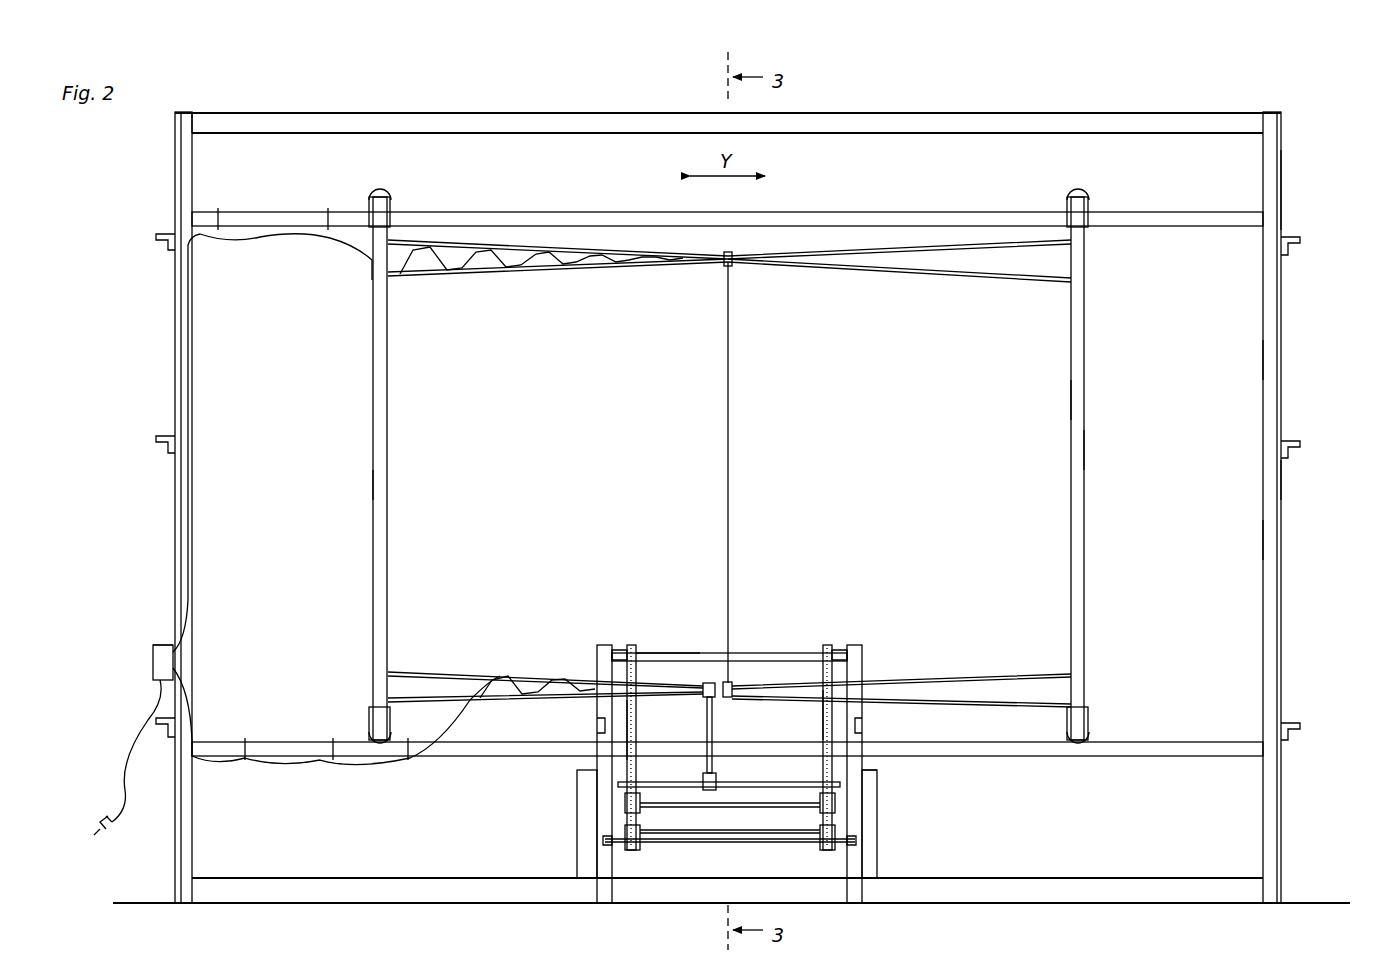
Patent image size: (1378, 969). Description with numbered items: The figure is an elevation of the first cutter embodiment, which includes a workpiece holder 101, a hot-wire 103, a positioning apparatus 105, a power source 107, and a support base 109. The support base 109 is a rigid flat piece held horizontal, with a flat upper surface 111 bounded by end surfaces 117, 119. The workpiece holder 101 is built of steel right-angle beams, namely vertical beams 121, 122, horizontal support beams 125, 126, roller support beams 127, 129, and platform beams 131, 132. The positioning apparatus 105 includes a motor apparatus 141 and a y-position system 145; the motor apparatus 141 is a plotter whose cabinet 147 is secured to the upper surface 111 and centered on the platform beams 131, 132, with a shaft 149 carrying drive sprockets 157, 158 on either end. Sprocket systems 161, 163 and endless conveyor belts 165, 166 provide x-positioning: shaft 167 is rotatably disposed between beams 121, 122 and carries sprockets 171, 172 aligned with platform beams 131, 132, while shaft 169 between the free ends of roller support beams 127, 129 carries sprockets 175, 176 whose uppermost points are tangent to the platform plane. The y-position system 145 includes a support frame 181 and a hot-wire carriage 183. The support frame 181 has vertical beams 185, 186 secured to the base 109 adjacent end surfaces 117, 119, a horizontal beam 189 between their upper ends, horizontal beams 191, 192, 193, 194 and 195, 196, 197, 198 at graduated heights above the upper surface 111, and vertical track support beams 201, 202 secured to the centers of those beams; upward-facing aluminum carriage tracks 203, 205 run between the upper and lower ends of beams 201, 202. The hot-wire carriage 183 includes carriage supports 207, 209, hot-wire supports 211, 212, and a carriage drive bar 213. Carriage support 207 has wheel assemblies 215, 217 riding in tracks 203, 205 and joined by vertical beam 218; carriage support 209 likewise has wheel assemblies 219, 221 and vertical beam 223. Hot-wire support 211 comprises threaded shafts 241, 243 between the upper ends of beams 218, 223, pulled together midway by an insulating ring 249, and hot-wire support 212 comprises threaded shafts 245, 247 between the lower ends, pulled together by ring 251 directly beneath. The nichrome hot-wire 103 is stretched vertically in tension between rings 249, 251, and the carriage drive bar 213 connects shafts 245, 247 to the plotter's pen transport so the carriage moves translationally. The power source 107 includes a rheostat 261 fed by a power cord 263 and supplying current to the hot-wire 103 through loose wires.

The workpiece holder 101 is at (575, 818).
The hot-wire 103 is at (730, 462).
The positioning apparatus 105 is at (1283, 333).
The power source 107 is at (150, 640).
The support base 109 is at (1000, 872).
The upper surface 111 is at (1105, 877).
The end surface 117 is at (178, 895).
The end surface 119 is at (1268, 895).
The vertical beam 121 is at (580, 865).
The vertical beam 122 is at (880, 860).
The horizontal support beam 125 is at (600, 722).
The horizontal support beam 126 is at (860, 733).
The roller support beam 127 is at (600, 645).
The roller support beam 129 is at (856, 645).
The platform beam 131 is at (630, 645).
The platform beam 132 is at (828, 645).
The motor apparatus 141 is at (880, 802).
The y-position system 145 is at (1283, 193).
The cabinet 147 is at (880, 786).
The shaft 149 is at (790, 787).
The drive sprocket 157 is at (640, 808).
The drive sprocket 158 is at (820, 806).
The sprocket system 161 is at (735, 845).
The sprocket system 163 is at (690, 653).
The endless conveyor belt 165 is at (637, 727).
The endless conveyor belt 166 is at (823, 713).
The shaft 167 is at (705, 838).
The shaft 169 is at (660, 653).
The sprocket 171 is at (640, 846).
The sprocket 172 is at (820, 846).
The sprocket 175 is at (620, 650).
The sprocket 176 is at (838, 650).
The support frame 181 is at (1283, 480).
The hot-wire carriage 183 is at (1086, 452).
The vertical beam 185 is at (175, 305).
The vertical beam 186 is at (1263, 362).
The horizontal beam 189 is at (500, 113).
The horizontal beam 191 is at (172, 235).
The horizontal beam 192 is at (162, 435).
The horizontal beam 193 is at (160, 738).
The horizontal beam 194 is at (176, 121).
The horizontal beam 195 is at (1295, 242).
The horizontal beam 196 is at (1295, 441).
The horizontal beam 197 is at (1295, 724).
The horizontal beam 198 is at (1283, 128).
The vertical track support beam 201 is at (192, 474).
The vertical track support beam 202 is at (1263, 535).
The carriage track 203 is at (275, 212).
The carriage track 205 is at (278, 742).
The carriage support 207 is at (388, 392).
The carriage support 209 is at (1068, 403).
The hot-wire support 211 is at (698, 266).
The hot-wire support 212 is at (683, 660).
The carriage drive bar 213 is at (713, 728).
The wheel assembly 215 is at (368, 197).
The wheel assembly 217 is at (367, 730).
The vertical beam 218 is at (388, 484).
The wheel assembly 219 is at (1094, 197).
The wheel assembly 221 is at (1094, 735).
The vertical beam 223 is at (1086, 332).
The shaft 241 is at (950, 246).
The shaft 243 is at (952, 278).
The shaft 245 is at (1010, 675).
The shaft 247 is at (1010, 706).
The ring 249 is at (733, 266).
The ring 251 is at (728, 680).
The rheostat 261 is at (153, 660).
The power cord 263 is at (150, 705).